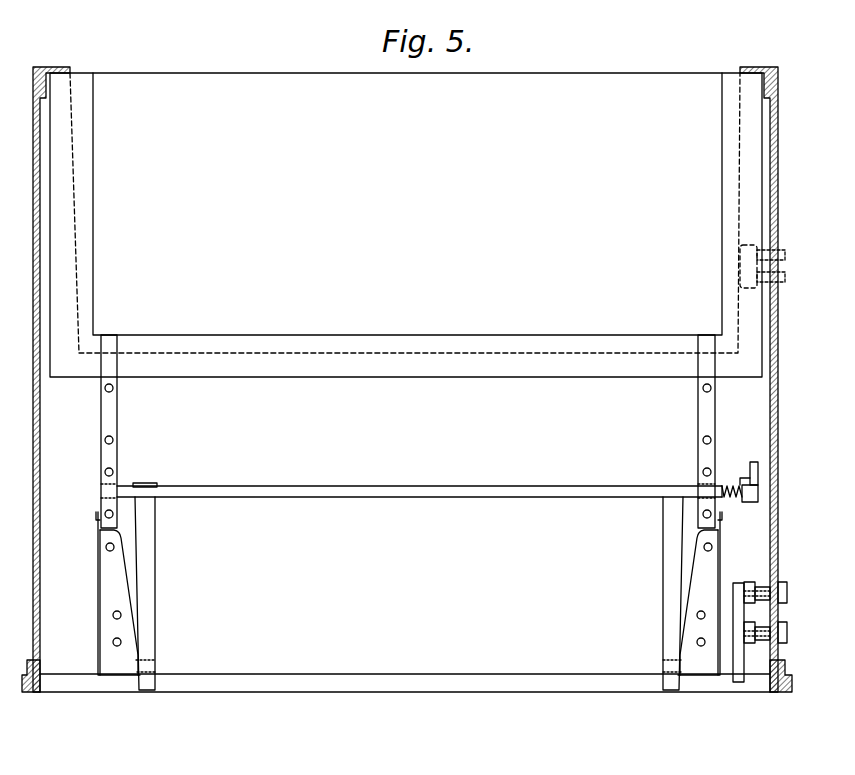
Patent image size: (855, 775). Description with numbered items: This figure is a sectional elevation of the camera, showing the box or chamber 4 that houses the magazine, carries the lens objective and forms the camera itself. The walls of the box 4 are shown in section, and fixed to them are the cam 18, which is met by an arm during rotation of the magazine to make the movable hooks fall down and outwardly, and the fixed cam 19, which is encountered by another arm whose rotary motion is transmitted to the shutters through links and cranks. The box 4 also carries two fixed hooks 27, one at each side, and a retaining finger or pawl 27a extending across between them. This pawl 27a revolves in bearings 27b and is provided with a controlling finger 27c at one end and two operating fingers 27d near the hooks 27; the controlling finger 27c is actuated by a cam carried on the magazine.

The box or chamber 4 is at (55, 406).
The cam 18 is at (748, 271).
The fixed cam 19 is at (750, 656).
The fixed hook 27 is at (149, 692).
The retaining finger or pawl 27a is at (390, 492).
The bearing 27b is at (699, 474).
The controlling finger 27c is at (752, 462).
The operating finger 27d is at (148, 563).